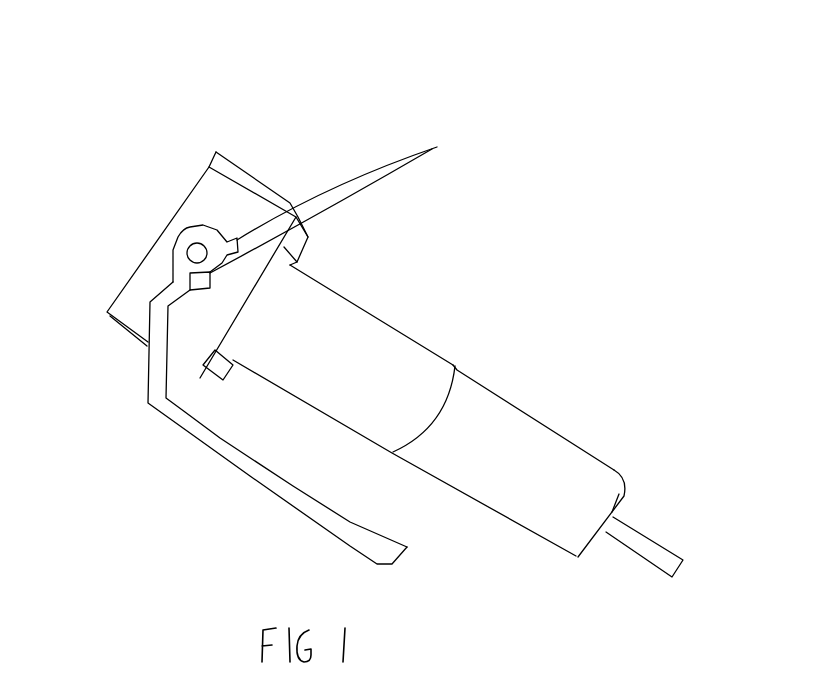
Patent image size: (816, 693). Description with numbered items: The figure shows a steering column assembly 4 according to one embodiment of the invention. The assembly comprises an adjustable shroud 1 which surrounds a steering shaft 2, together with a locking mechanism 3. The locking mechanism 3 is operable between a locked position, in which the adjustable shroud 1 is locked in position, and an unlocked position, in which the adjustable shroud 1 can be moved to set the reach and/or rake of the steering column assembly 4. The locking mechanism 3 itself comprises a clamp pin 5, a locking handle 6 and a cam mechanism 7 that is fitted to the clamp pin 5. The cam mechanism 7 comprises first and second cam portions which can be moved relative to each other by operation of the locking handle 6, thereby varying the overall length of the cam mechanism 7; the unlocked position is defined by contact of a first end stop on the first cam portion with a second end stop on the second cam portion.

The adjustable shroud 1 is at (368, 337).
The steering shaft 2 is at (647, 547).
The locking mechanism 3 is at (125, 305).
The steering column assembly 4 is at (247, 173).
The clamp pin 5 is at (194, 251).
The locking handle 6 is at (293, 490).
The cam mechanism 7 is at (335, 200).